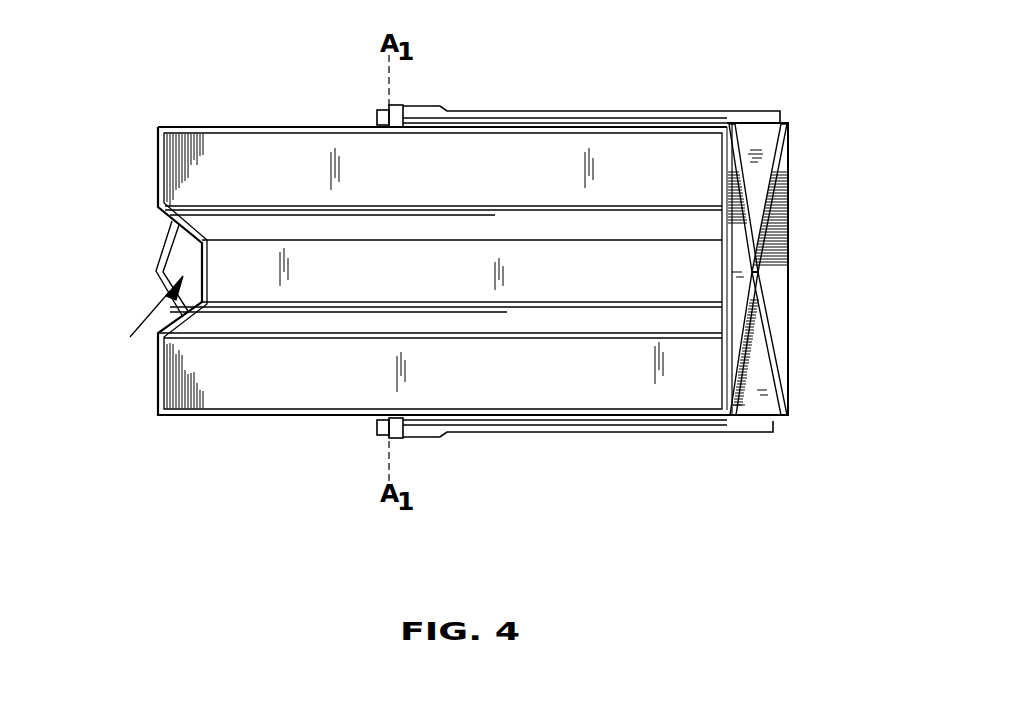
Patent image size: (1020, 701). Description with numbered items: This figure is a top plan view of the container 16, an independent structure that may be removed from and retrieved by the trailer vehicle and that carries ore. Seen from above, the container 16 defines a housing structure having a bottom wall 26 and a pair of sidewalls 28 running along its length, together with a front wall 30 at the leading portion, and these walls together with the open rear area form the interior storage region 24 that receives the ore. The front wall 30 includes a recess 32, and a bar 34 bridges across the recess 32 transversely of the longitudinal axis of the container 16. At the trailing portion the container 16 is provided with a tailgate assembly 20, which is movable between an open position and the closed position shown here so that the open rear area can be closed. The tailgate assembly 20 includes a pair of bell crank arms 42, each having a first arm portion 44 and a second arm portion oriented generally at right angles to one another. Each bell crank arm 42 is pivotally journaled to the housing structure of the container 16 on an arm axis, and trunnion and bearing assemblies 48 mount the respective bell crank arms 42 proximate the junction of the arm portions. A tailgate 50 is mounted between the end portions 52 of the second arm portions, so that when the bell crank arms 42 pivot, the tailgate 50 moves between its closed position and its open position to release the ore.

The container 16 is at (180, 95).
The tailgate assembly 20 is at (845, 195).
The interior storage region 24 is at (425, 263).
The bottom wall 26 is at (500, 378).
The sidewalls 28 is at (219, 133).
The front wall 30 is at (160, 166).
The recess 32 is at (130, 337).
The bar 34 is at (155, 270).
The bell crank arms 42 is at (470, 100).
The first arm portion 44 is at (678, 111).
The trunnion and bearing assemblies 48 is at (396, 104).
The tailgate 50 is at (757, 297).
The end portions 52 is at (783, 123).